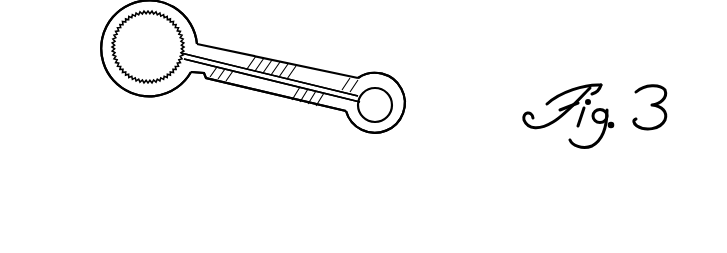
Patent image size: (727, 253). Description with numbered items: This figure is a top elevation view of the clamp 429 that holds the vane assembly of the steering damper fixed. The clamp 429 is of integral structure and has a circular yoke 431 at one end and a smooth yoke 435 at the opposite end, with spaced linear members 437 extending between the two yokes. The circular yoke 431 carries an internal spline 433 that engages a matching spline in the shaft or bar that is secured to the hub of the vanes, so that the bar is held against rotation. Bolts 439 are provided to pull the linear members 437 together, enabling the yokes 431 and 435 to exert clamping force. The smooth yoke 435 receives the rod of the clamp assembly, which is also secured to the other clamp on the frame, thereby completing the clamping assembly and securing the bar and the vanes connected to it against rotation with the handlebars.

The clamp 429 is at (237, 113).
The circular yoke 431 is at (130, 91).
The internal spline 433 is at (120, 60).
The smooth yoke 435 is at (378, 131).
The spaced linear members 437 is at (242, 76).
The bolts 439 is at (210, 82).